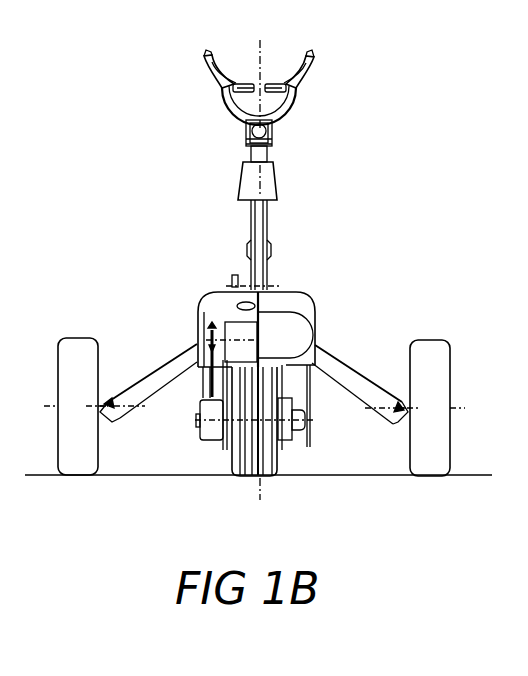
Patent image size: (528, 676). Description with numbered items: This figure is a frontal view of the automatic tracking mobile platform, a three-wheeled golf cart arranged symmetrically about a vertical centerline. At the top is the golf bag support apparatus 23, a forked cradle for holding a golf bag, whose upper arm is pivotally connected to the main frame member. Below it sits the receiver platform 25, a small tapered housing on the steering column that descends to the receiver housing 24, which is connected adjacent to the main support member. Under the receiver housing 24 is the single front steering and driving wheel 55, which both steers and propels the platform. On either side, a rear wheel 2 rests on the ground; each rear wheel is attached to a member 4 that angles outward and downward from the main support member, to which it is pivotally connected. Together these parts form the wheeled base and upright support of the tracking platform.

The rear wheel 2 is at (80, 360).
The member 4 is at (150, 387).
The golf bag support apparatus 23 is at (218, 79).
The receiver housing 24 is at (287, 303).
The receiver platform 25 is at (267, 177).
The front steering and driving wheel 55 is at (250, 470).